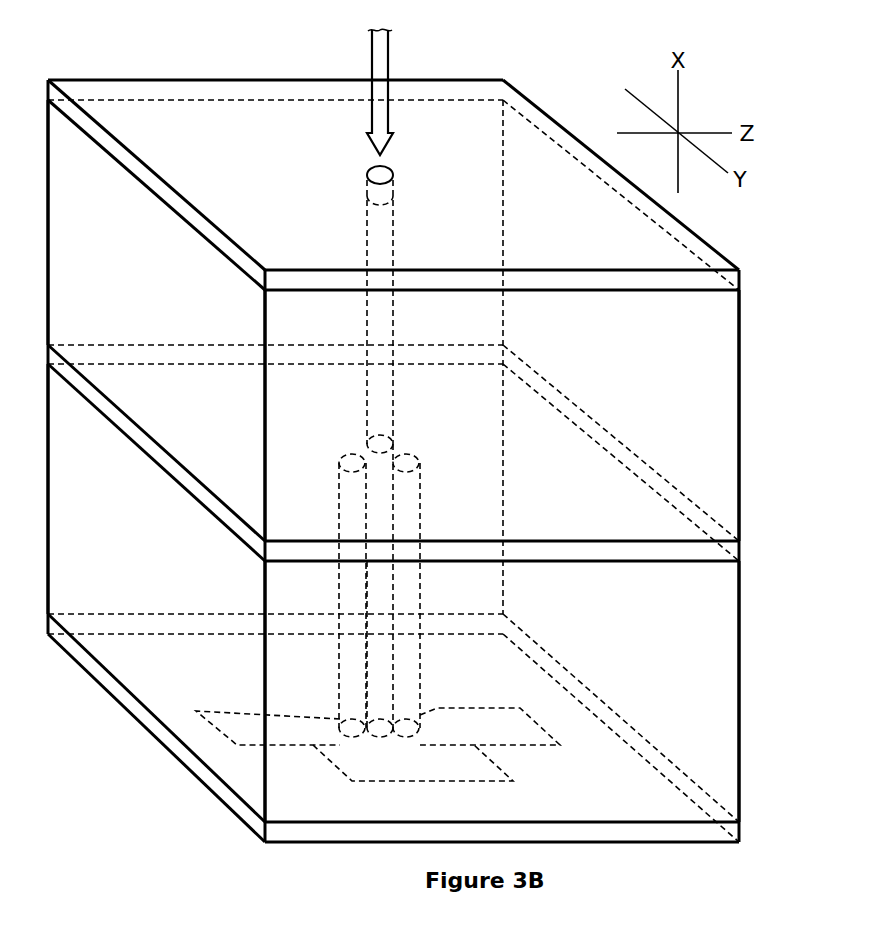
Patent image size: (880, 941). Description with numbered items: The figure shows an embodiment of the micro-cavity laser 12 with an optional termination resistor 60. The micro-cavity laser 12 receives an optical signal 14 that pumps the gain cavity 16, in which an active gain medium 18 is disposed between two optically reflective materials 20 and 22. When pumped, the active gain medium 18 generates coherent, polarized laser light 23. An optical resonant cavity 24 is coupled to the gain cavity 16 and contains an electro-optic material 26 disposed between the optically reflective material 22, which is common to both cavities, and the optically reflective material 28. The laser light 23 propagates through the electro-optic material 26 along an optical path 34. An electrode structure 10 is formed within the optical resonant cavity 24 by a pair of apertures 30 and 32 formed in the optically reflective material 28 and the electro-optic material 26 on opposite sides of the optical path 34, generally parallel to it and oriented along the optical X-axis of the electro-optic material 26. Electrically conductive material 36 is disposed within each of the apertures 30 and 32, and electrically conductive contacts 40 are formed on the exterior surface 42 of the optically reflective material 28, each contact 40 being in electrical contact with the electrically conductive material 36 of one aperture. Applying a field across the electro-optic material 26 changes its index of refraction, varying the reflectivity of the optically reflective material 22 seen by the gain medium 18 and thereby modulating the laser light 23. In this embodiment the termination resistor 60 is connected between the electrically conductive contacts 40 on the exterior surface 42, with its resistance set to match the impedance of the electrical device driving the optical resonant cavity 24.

The electrode structure 10 is at (420, 432).
The micro-cavity laser 12 is at (200, 62).
The optical signal 14 is at (390, 58).
The gain cavity 16 is at (750, 363).
The active gain medium 18 is at (740, 415).
The optically reflective material 20 is at (740, 283).
The optically reflective material 22 is at (740, 551).
The laser light 23 is at (395, 318).
The optical resonant cavity 24 is at (750, 647).
The electro-optic material 26 is at (740, 718).
The optically reflective material 28 is at (740, 832).
The aperture 30 is at (410, 505).
The aperture 32 is at (350, 510).
The optical path 34 is at (380, 583).
The electrically conductive material 36 is at (347, 457).
The electrically conductive contact 40 is at (232, 711).
The exterior surface 42 is at (340, 843).
The termination resistor 60 is at (490, 783).